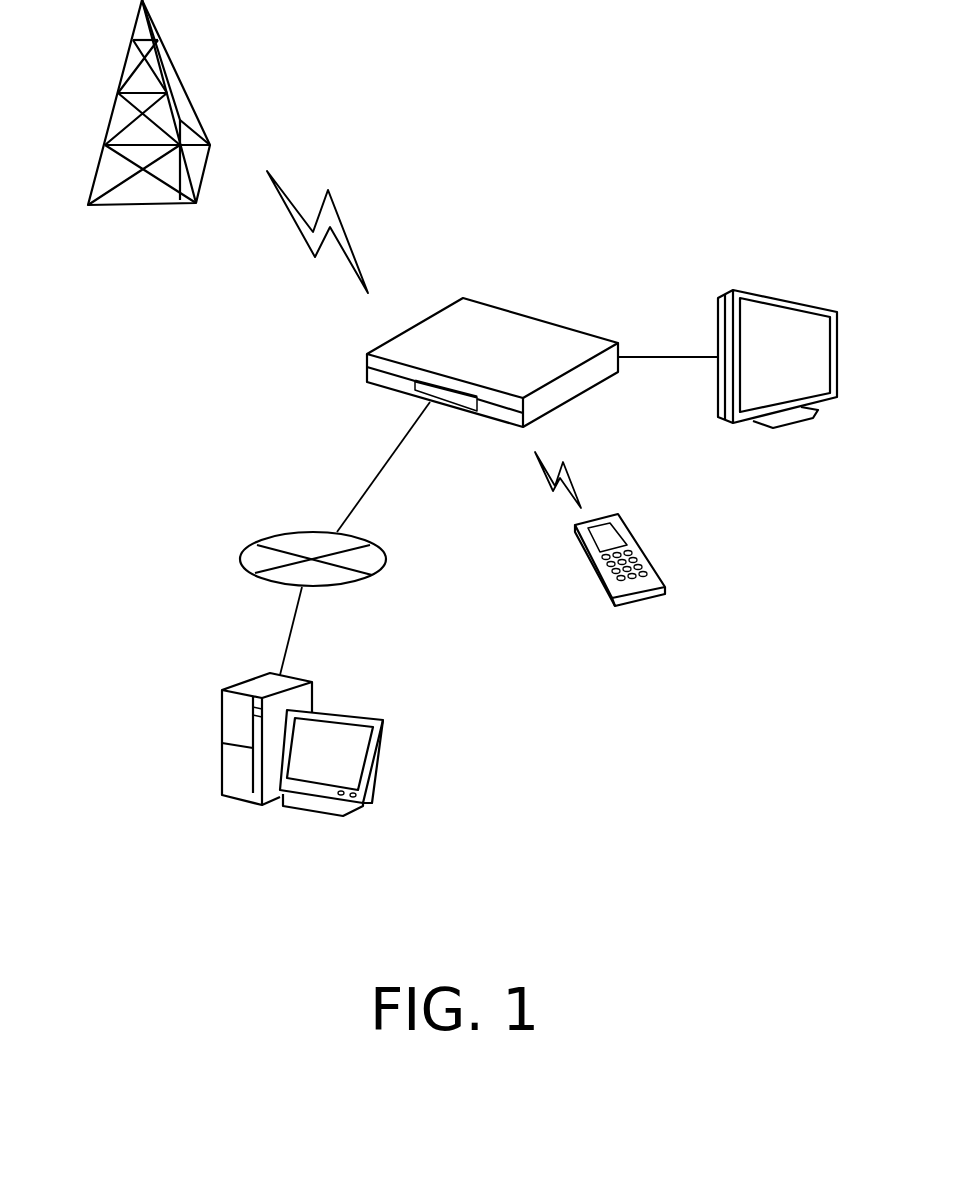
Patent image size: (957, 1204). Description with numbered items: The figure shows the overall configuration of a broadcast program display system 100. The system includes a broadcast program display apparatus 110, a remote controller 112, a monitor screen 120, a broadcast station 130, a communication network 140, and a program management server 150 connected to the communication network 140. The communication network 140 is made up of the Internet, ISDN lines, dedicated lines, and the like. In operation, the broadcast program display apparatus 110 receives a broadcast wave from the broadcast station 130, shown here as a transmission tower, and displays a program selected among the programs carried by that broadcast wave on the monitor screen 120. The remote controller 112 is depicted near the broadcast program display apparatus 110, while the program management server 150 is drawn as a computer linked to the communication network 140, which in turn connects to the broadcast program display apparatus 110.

The broadcast program display system 100 is at (550, 150).
The broadcast program display apparatus 110 is at (523, 317).
The remote controller 112 is at (632, 527).
The monitor screen 120 is at (790, 298).
The broadcast station 130 is at (165, 43).
The communication network 140 is at (278, 533).
The program management server 150 is at (295, 675).